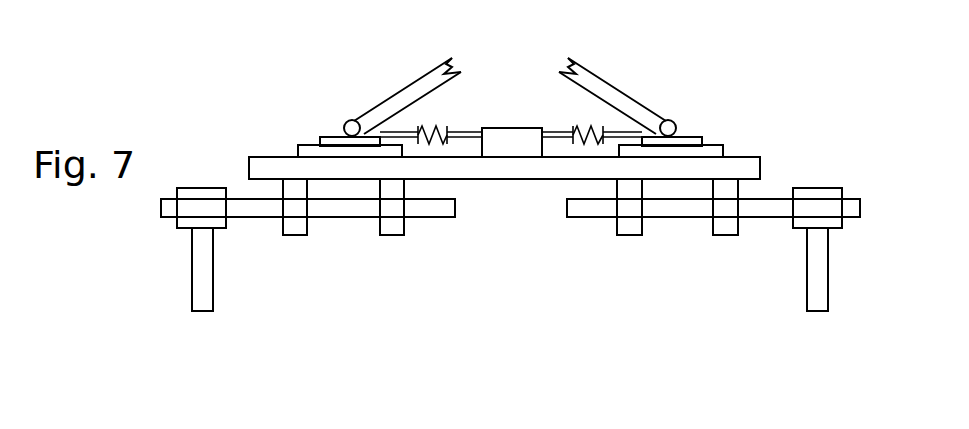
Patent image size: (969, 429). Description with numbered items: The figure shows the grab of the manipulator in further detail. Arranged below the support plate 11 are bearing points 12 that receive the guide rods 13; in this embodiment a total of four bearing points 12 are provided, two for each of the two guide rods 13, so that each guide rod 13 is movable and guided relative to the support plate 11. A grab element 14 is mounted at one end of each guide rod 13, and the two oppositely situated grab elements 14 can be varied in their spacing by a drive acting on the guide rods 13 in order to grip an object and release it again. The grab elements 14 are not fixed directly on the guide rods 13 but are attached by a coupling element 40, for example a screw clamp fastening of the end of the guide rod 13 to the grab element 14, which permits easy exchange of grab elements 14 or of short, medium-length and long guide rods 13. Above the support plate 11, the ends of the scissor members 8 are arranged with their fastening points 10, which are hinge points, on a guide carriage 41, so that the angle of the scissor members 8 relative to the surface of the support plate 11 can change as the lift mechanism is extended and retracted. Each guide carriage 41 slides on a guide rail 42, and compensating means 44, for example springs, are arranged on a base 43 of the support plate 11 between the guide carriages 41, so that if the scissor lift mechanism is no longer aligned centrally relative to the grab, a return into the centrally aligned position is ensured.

The scissor members 8 is at (408, 87).
The fastening points 10 is at (346, 122).
The support plate 11 is at (762, 168).
The bearing point 12 is at (297, 233).
The guide rod 13 is at (350, 210).
The grab element 14 is at (200, 298).
The coupling element 40 is at (201, 188).
The guide carriage 41 is at (318, 143).
The guide rail 42 is at (298, 150).
The base 43 is at (512, 145).
The compensating means 44 is at (573, 110).